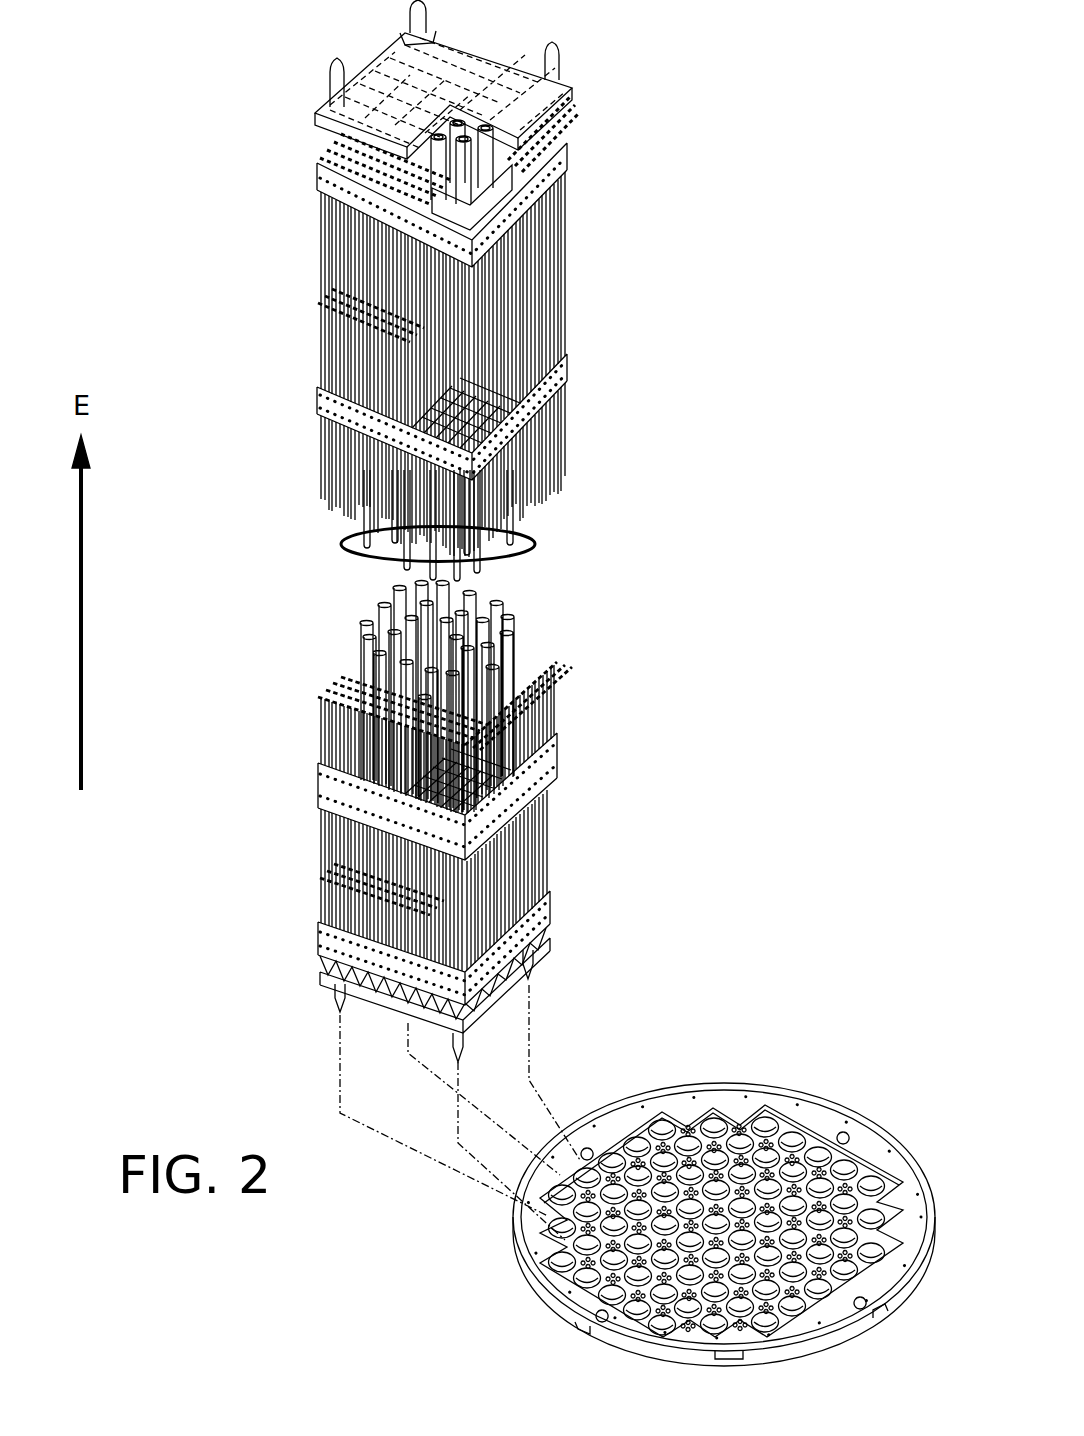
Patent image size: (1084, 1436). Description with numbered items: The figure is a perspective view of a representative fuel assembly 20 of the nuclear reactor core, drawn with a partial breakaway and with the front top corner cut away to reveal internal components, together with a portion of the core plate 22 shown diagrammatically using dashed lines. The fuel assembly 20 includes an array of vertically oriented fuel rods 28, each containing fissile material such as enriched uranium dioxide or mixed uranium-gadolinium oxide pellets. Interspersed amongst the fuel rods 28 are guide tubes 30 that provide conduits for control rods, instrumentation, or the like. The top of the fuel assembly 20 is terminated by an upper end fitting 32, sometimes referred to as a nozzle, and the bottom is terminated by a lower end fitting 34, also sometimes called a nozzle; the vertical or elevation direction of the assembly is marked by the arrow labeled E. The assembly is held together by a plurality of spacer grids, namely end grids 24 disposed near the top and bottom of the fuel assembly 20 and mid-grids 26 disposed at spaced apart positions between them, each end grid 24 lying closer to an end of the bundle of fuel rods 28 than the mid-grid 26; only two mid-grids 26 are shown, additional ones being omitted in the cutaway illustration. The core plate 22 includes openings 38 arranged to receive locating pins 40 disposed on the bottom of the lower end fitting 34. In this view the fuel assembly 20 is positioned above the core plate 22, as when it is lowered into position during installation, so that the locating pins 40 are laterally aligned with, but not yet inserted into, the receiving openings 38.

The fuel assembly 20 is at (660, 407).
The core plate 22 is at (826, 1128).
The end grids 24 is at (326, 183).
The mid-grids 26 is at (342, 407).
The fuel rods 28 is at (352, 502).
The guide tubes 30 is at (535, 541).
The upper end fitting 32 is at (475, 48).
The lower end fitting 34 is at (507, 998).
The openings 38 is at (646, 1262).
The locating pins 40 is at (466, 1060).